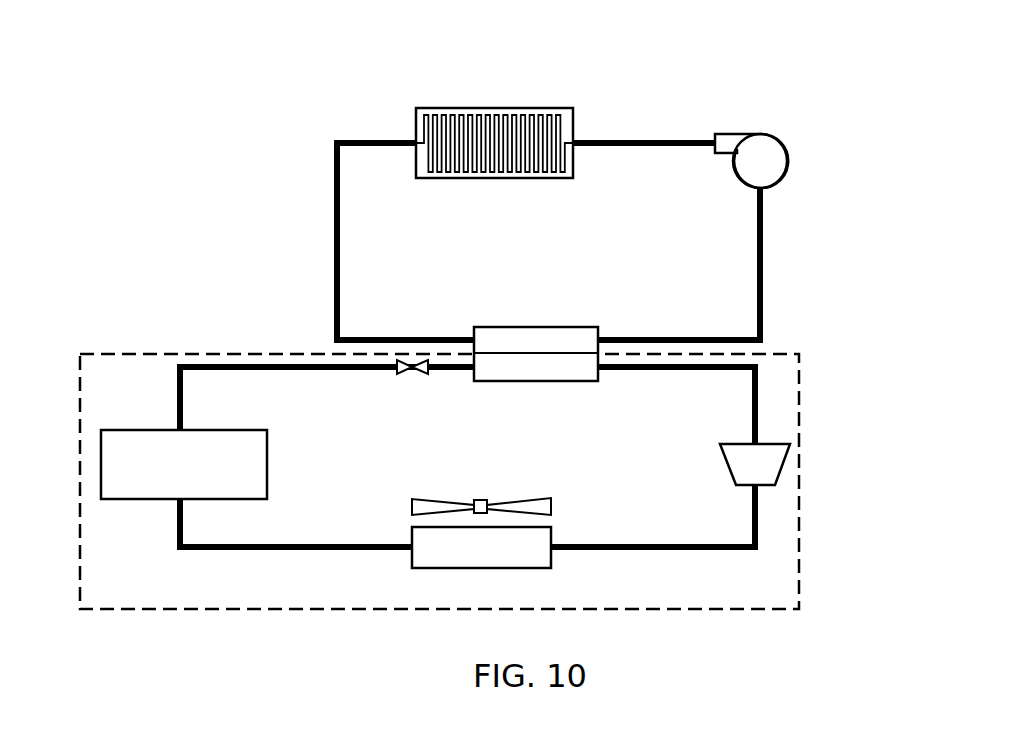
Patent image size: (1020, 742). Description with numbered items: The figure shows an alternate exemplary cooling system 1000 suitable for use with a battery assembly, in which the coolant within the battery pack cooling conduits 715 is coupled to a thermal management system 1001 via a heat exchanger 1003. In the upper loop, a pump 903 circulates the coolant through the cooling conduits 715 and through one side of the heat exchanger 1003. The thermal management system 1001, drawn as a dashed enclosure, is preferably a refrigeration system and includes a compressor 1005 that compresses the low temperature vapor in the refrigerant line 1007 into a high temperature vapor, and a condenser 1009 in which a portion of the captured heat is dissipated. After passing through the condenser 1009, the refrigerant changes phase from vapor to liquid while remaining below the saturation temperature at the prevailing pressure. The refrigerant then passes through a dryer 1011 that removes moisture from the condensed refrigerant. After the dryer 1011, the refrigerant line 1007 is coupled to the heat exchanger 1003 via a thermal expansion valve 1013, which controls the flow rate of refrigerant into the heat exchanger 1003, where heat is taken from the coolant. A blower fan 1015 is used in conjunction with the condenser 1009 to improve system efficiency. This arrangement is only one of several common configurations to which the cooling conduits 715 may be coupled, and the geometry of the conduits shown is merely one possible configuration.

The cooling conduits 715 is at (438, 127).
The pump 903 is at (738, 147).
The cooling system 1000 is at (842, 189).
The thermal management system 1001 is at (806, 469).
The heat exchanger 1003 is at (515, 327).
The compressor 1005 is at (722, 455).
The refrigerant line 1007 is at (752, 388).
The condenser 1009 is at (552, 540).
The dryer 1011 is at (240, 430).
The thermal expansion valve 1013 is at (399, 374).
The blower fan 1015 is at (478, 501).